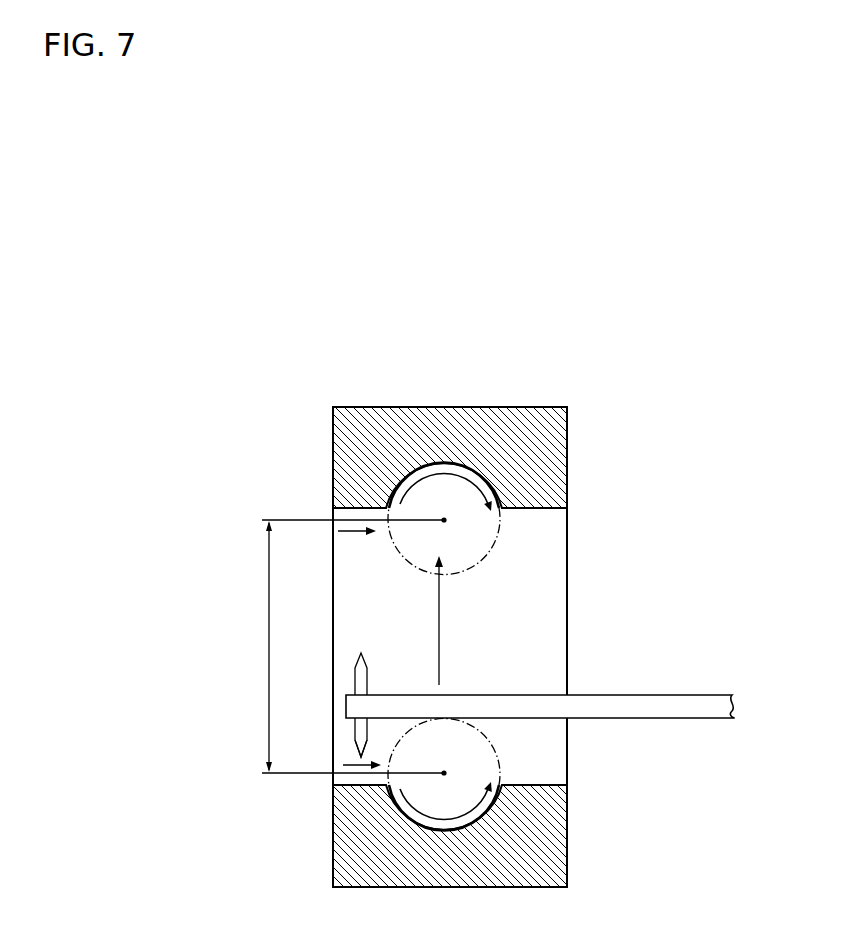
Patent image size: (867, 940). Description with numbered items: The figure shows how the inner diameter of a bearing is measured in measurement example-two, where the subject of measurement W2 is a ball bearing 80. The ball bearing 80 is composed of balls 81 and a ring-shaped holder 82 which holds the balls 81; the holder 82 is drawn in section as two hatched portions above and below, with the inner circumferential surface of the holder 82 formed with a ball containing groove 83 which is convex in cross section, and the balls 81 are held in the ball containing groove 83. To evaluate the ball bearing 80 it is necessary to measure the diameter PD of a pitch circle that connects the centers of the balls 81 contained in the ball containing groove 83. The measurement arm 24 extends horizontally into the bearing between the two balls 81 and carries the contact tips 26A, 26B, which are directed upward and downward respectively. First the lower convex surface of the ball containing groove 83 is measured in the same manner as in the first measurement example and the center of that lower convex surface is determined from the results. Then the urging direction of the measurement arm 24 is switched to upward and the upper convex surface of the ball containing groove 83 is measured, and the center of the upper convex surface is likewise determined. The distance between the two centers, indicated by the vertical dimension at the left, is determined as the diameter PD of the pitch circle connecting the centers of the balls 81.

The ball bearing 80 is at (535, 407).
The subject of measurement W2 is at (371, 407).
The ring-shaped holder 82 is at (565, 460).
The balls 81 is at (505, 536).
The ball containing groove 83 is at (450, 462).
The upper probe tip 26A is at (367, 662).
The lower probe tip 26B is at (355, 746).
The measurement arm 24 is at (680, 695).
The diameter of pitch circle PD is at (342, 646).